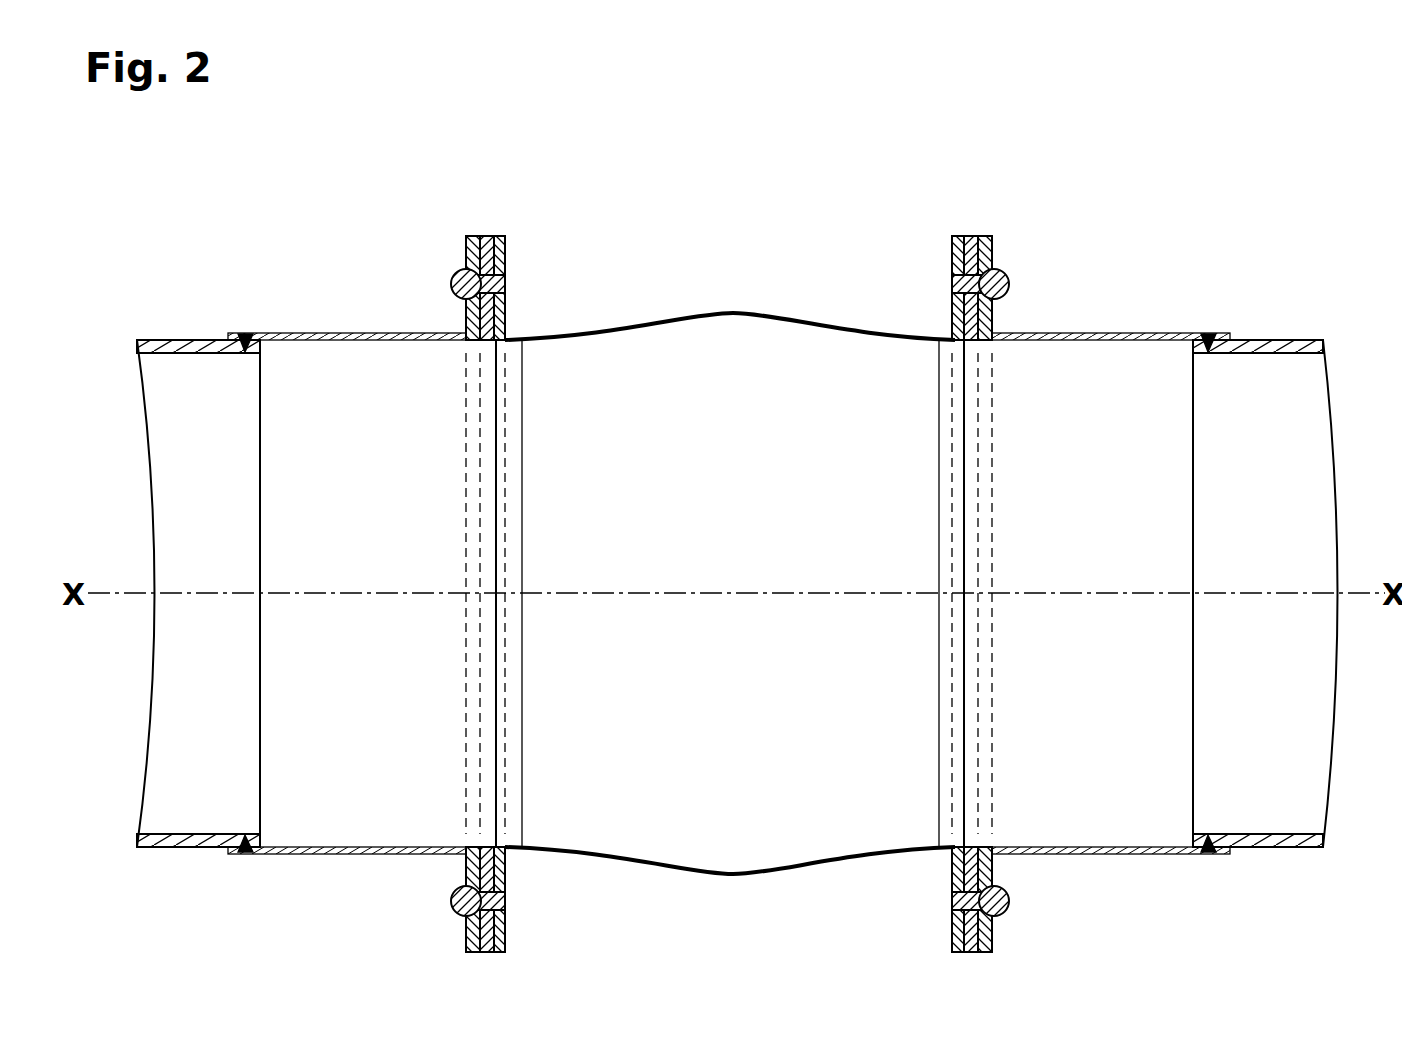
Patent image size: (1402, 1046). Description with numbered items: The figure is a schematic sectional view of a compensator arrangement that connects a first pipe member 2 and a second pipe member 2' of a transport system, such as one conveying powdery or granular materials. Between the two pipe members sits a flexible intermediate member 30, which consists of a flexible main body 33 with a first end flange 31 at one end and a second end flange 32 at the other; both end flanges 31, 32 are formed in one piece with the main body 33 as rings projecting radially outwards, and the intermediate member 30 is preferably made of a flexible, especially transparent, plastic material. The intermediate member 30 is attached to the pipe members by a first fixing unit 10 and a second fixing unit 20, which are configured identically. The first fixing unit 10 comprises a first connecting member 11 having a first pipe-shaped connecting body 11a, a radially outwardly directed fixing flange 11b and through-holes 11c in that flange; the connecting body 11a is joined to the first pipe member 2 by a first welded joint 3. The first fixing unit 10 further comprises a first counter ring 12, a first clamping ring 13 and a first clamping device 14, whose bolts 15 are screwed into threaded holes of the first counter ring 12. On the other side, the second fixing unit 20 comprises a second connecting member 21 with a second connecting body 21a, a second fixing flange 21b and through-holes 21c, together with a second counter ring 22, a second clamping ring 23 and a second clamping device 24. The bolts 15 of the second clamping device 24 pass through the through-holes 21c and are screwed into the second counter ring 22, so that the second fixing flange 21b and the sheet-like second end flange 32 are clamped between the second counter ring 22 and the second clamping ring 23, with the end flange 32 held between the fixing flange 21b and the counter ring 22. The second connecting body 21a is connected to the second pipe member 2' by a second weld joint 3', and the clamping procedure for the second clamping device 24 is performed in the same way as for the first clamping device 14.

The first pipe member 2 is at (1265, 540).
The second pipe member 2' is at (198, 539).
The first welded joint 3 is at (1237, 543).
The second weld joint 3' is at (216, 542).
The first fixing unit 10 is at (1030, 532).
The first connecting member 11 is at (1030, 594).
The first pipe-shaped connecting body 11a is at (1170, 333).
The fixing flange 11b is at (1000, 242).
The through-holes 11c is at (955, 912).
The first counter ring 12 is at (955, 878).
The first clamping ring 13 is at (992, 937).
The first clamping device 14 is at (1022, 880).
The bolt 15 is at (451, 284).
The second fixing unit 20 is at (426, 532).
The second connecting member 21 is at (426, 593).
The second connecting body 21a is at (290, 333).
The second fixing flange 21b is at (468, 866).
The through-holes 21c is at (505, 912).
The second counter ring 22 is at (500, 878).
The second clamping ring 23 is at (468, 937).
The second clamping device 24 is at (446, 260).
The flexible intermediate member 30 is at (730, 530).
The first end flange 31 is at (963, 232).
The second end flange 32 is at (490, 232).
The flexible main body 33 is at (697, 336).